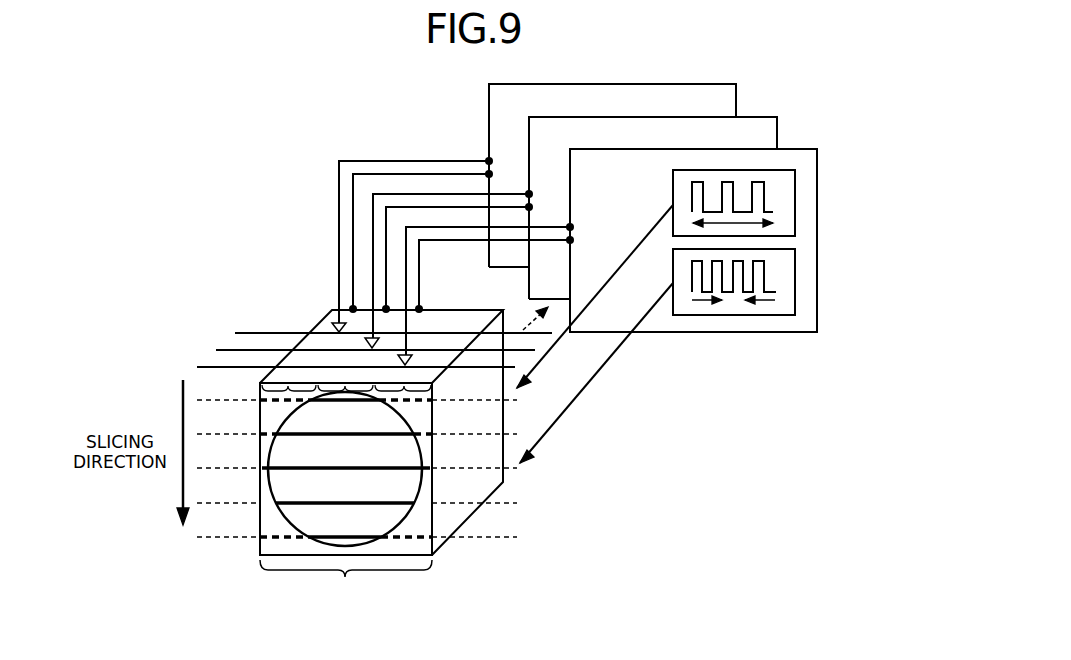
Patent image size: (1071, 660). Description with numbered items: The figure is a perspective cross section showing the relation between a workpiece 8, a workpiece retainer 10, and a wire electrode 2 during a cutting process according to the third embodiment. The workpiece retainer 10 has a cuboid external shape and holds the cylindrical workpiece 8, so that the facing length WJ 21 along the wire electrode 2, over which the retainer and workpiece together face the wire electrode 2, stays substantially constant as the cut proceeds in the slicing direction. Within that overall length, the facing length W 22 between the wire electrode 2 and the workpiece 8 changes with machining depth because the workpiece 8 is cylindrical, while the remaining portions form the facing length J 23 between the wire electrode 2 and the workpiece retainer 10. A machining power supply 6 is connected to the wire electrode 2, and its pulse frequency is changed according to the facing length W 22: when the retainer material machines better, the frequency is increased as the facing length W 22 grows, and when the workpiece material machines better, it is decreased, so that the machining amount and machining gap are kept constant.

The wire electrode 2 is at (200, 365).
The machining power supply 6 is at (806, 149).
The workpiece 8 is at (297, 515).
The workpiece retainer 10 is at (320, 312).
The facing length WJ 21 is at (346, 581).
The facing length W 22 is at (343, 385).
The facing length J 23 is at (288, 385).